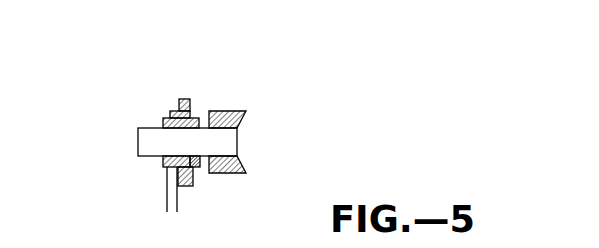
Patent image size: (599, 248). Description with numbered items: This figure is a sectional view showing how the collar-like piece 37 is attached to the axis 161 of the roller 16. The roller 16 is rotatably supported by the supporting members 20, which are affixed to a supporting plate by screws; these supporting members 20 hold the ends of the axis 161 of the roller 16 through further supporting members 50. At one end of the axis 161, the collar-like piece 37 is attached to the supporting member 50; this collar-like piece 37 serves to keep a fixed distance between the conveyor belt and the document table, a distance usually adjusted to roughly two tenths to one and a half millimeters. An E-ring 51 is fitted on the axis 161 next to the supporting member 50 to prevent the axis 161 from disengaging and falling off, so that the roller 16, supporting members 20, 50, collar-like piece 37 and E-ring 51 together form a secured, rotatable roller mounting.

The roller 16 is at (235, 112).
The supporting member 20 is at (170, 112).
The collar-like piece 37 is at (185, 98).
The supporting member 50 is at (163, 121).
The E-ring 51 is at (199, 165).
The axis 161 is at (145, 143).